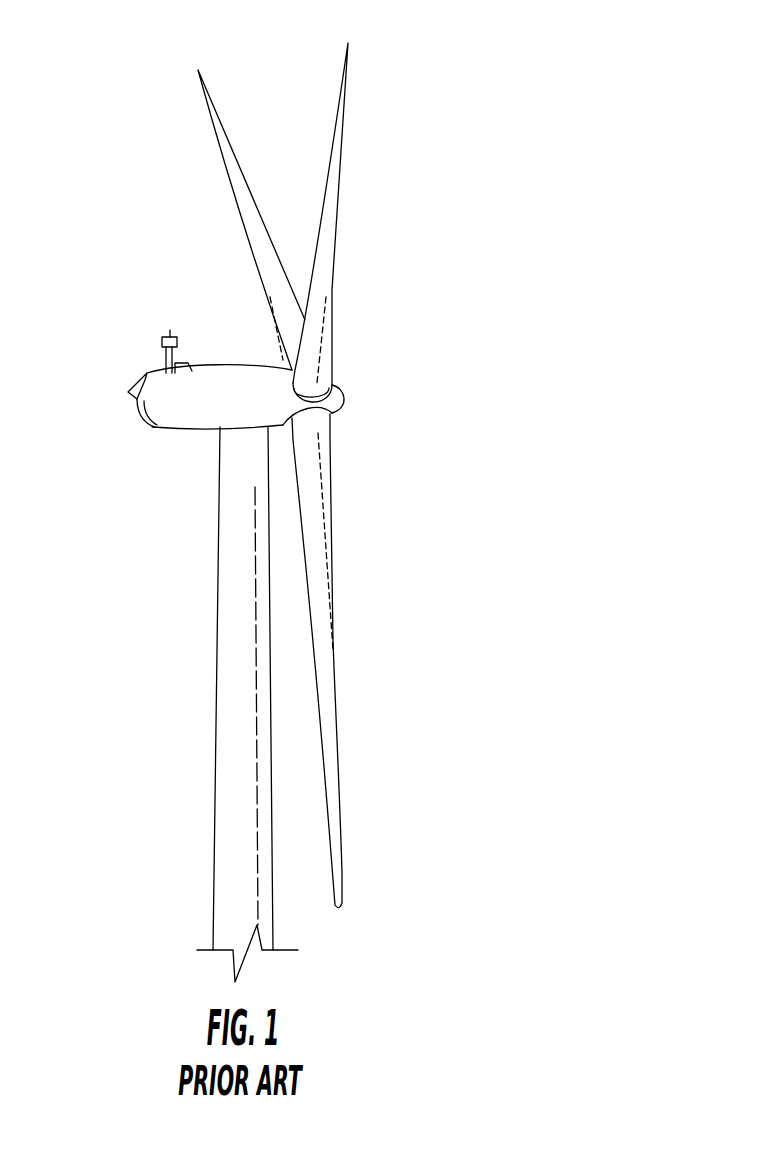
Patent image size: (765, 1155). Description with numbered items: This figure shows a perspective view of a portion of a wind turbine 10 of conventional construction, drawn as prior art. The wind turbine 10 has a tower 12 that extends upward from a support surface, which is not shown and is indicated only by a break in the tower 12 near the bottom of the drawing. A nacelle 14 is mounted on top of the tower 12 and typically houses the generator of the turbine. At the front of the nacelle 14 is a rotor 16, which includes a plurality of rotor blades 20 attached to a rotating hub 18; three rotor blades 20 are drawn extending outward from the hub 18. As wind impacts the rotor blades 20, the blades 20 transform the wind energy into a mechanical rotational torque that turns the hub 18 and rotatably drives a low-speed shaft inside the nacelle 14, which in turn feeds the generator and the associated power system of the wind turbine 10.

The wind turbine 10 is at (231, 512).
The tower 12 is at (217, 704).
The nacelle 14 is at (200, 418).
The rotor 16 is at (313, 475).
The rotating hub 18 is at (336, 432).
The rotor blades 20 is at (303, 475).